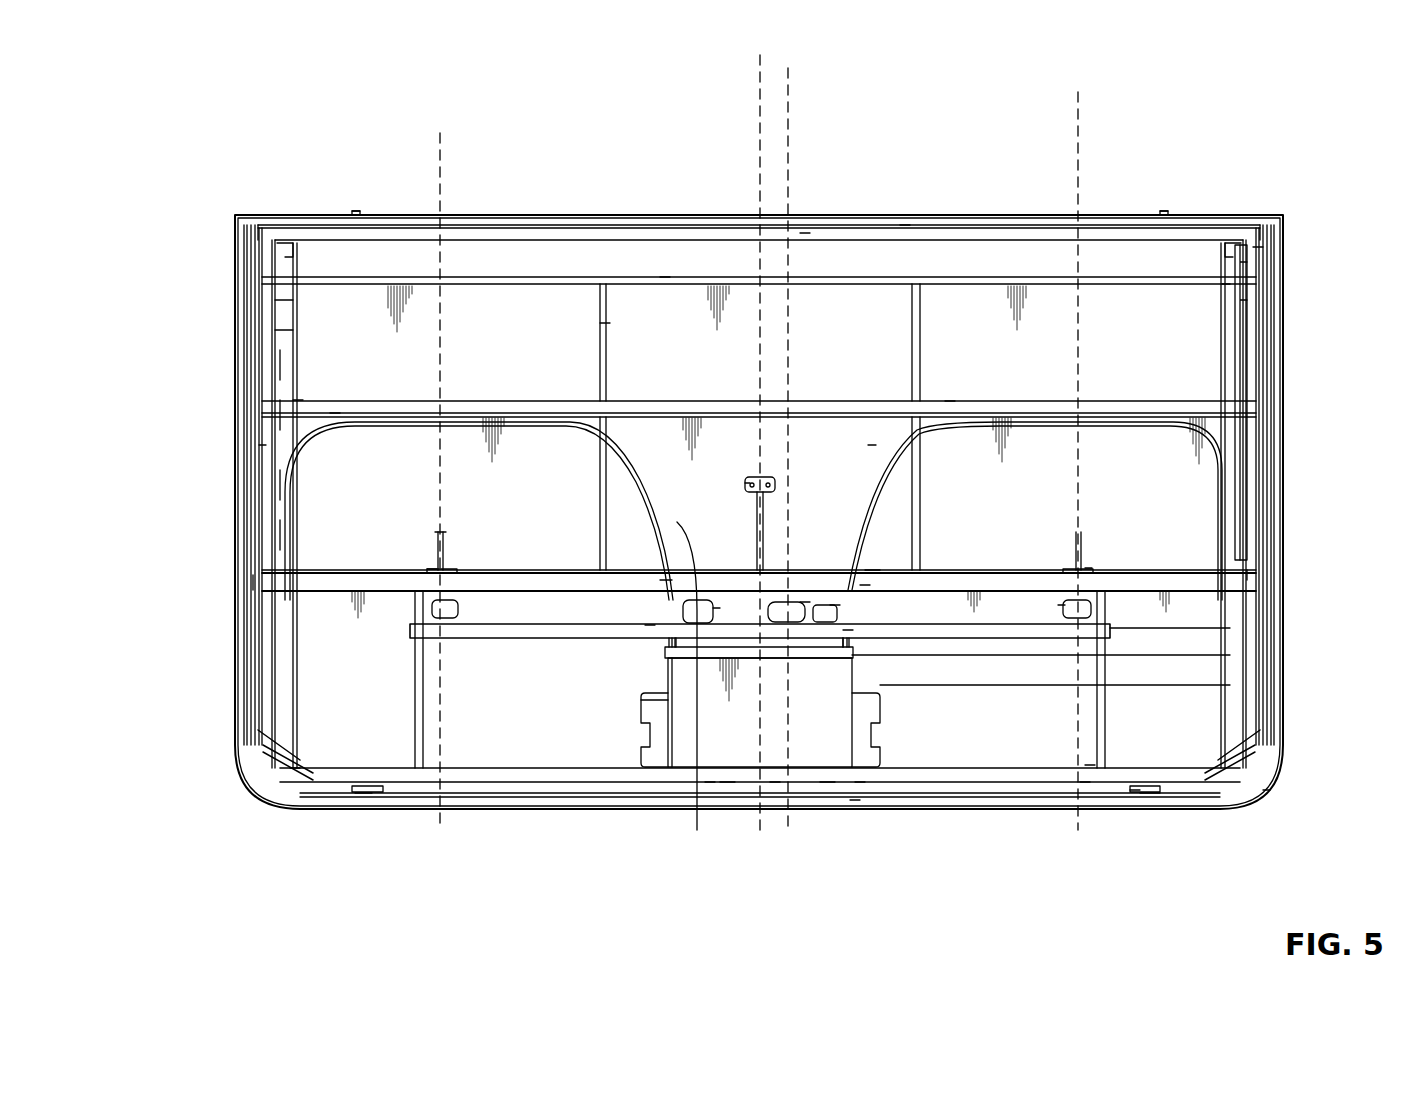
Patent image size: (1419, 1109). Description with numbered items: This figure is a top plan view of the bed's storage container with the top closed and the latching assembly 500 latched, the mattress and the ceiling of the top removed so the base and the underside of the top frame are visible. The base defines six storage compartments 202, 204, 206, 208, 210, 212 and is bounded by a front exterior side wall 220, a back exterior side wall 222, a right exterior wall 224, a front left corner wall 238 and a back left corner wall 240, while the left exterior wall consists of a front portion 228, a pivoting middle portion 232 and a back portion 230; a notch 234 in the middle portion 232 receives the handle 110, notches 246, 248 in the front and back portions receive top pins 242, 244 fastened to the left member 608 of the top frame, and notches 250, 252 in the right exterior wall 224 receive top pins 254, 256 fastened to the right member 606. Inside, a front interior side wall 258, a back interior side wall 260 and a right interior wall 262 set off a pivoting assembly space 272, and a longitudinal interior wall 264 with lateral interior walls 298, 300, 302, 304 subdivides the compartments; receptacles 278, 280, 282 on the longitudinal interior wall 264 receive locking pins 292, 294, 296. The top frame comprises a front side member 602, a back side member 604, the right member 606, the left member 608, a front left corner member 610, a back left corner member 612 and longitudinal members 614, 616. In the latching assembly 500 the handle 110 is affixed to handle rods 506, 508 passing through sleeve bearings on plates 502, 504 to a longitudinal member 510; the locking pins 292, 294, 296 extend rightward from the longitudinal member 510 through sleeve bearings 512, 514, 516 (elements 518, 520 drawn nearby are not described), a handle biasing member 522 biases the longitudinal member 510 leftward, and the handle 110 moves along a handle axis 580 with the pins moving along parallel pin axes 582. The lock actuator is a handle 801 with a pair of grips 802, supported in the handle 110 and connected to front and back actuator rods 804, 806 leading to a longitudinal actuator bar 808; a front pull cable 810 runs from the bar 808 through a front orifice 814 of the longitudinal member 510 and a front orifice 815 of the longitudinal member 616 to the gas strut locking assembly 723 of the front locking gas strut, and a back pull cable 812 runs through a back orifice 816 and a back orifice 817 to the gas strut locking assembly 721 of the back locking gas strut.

The handle 110 is at (708, 800).
The storage compartment 202 is at (552, 427).
The storage compartment 204 is at (775, 427).
The storage compartment 206 is at (1178, 402).
The storage compartment 208 is at (374, 679).
The storage compartment 210 is at (563, 699).
The storage compartment 212 is at (1012, 679).
The front exterior side wall 220 is at (240, 515).
The back exterior side wall 222 is at (1257, 262).
The right exterior wall 224 is at (1060, 212).
The front portion 228 is at (330, 812).
The back portion 230 is at (1200, 812).
The middle portion 232 is at (1085, 782).
The notch 234 is at (860, 798).
The front left corner wall 238 is at (297, 773).
The back left corner wall 240 is at (1265, 790).
The top pin 242 is at (385, 789).
The top pin 244 is at (1130, 790).
The notch 246 is at (363, 800).
The notch 248 is at (1160, 800).
The notch 250 is at (355, 180).
The notch 252 is at (1165, 182).
The top pin 254 is at (355, 210).
The top pin 256 is at (1164, 212).
The front interior side wall 258 is at (403, 570).
The back interior side wall 260 is at (1227, 290).
The right interior wall 262 is at (665, 277).
The longitudinal interior wall 264 is at (1058, 606).
The pivoting assembly space 272 is at (759, 262).
The receptacle 278 is at (427, 569).
The receptacle 280 is at (950, 400).
The receptacle 282 is at (1087, 568).
The locking pin 292 is at (438, 532).
The locking pin 294 is at (905, 330).
The locking pin 296 is at (1150, 568).
The lateral interior wall 298 is at (607, 323).
The lateral interior wall 300 is at (905, 225).
The lateral interior wall 302 is at (415, 745).
The lateral interior wall 304 is at (1090, 770).
The latching assembly 500 is at (637, 692).
The plate 502 is at (660, 753).
The plate 504 is at (1100, 745).
The handle rod 506 is at (650, 668).
The handle rod 508 is at (860, 690).
The longitudinal member 510 is at (480, 645).
The sleeve bearing 512 is at (432, 612).
The sleeve bearing 514 is at (806, 604).
The sleeve bearing 516 is at (714, 611).
The isolator mount 518 is at (872, 572).
The isolator clamp 520 is at (838, 608).
The handle biasing member 522 is at (748, 483).
The handle axis 580 is at (757, 110).
The pin axes 582 is at (440, 195).
The front side member 602 is at (262, 445).
The back side member 604 is at (1260, 247).
The right member 606 is at (805, 233).
The left member 608 is at (853, 820).
The front left corner member 610 is at (290, 757).
The back left corner member 612 is at (1240, 745).
The longitudinal member 614 is at (333, 403).
The longitudinal member 616 is at (297, 400).
The gas strut locking assembly 721 is at (1252, 570).
The gas strut locking assembly 723 is at (255, 578).
The handle 801 is at (773, 790).
The pair of grips 802 is at (821, 800).
The front actuator rod 804 is at (667, 680).
The back actuator rod 806 is at (855, 653).
The longitudinal actuator bar 808 is at (1112, 628).
The front pull cable 810 is at (697, 830).
The back pull cable 812 is at (873, 453).
The front orifice 814 is at (655, 628).
The front orifice 815 is at (665, 583).
The back orifice 816 is at (848, 630).
The back orifice 817 is at (866, 583).